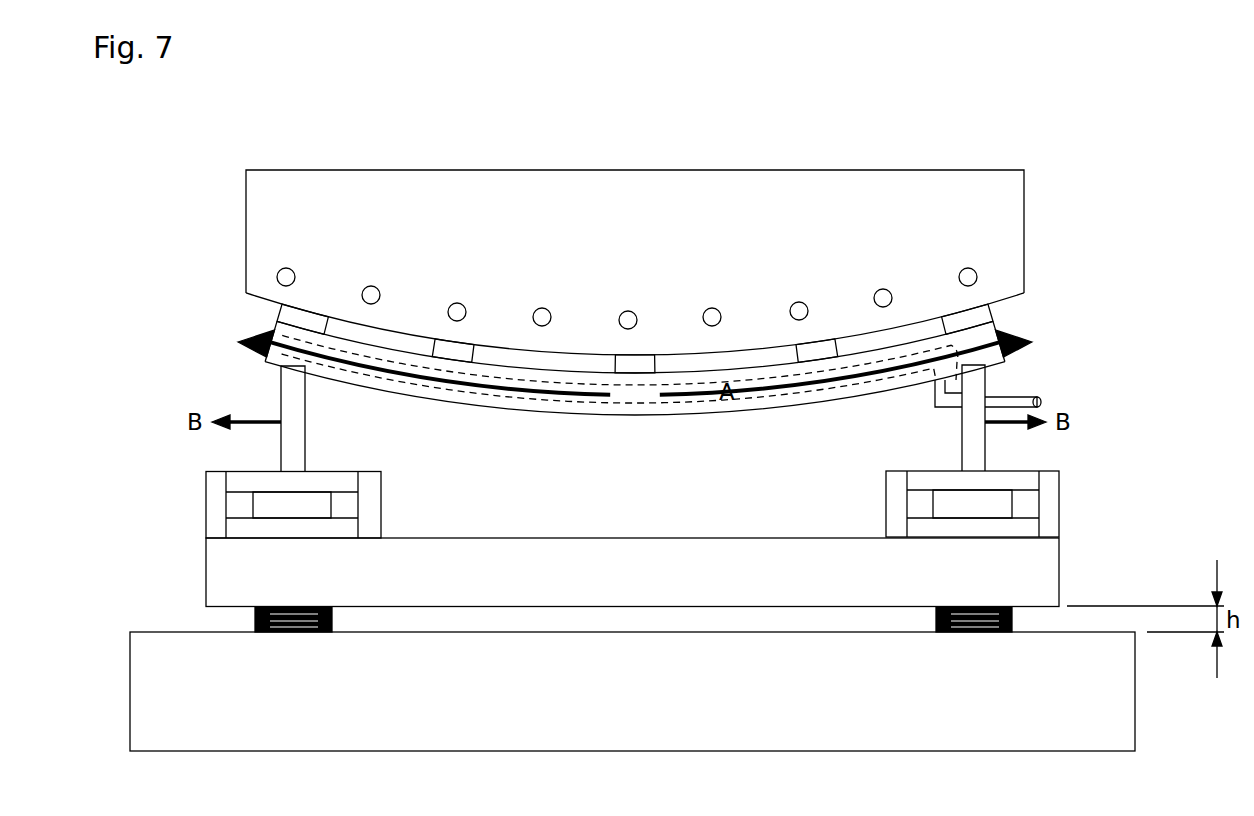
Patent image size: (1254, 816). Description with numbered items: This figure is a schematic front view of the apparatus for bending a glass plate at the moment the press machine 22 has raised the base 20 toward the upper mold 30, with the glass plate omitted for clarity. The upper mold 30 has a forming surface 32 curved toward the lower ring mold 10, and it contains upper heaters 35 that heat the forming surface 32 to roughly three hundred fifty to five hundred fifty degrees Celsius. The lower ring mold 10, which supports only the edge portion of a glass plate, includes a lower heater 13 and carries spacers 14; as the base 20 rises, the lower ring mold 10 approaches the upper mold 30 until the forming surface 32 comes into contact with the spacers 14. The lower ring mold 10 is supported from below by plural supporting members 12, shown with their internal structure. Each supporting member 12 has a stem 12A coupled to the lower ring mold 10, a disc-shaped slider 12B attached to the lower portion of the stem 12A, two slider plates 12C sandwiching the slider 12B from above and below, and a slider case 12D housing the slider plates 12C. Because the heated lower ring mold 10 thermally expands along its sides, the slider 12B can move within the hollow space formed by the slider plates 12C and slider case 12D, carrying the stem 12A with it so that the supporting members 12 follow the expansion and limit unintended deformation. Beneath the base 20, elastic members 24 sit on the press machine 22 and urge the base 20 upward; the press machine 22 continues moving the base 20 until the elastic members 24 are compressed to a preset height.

The lower ring mold 10 is at (633, 418).
The supporting member 12 is at (381, 462).
The stem 12A is at (281, 447).
The slider 12B is at (262, 500).
The slider plate 12C is at (356, 480).
The slider case 12D is at (216, 490).
The lower heater 13 is at (1012, 400).
The spacer 14 is at (290, 318).
The base 20 is at (1050, 573).
The press machine 22 is at (1135, 690).
The elastic member 24 is at (258, 622).
The upper mold 30 is at (1026, 214).
The forming surface 32 is at (1018, 298).
The upper heater 35 is at (292, 268).